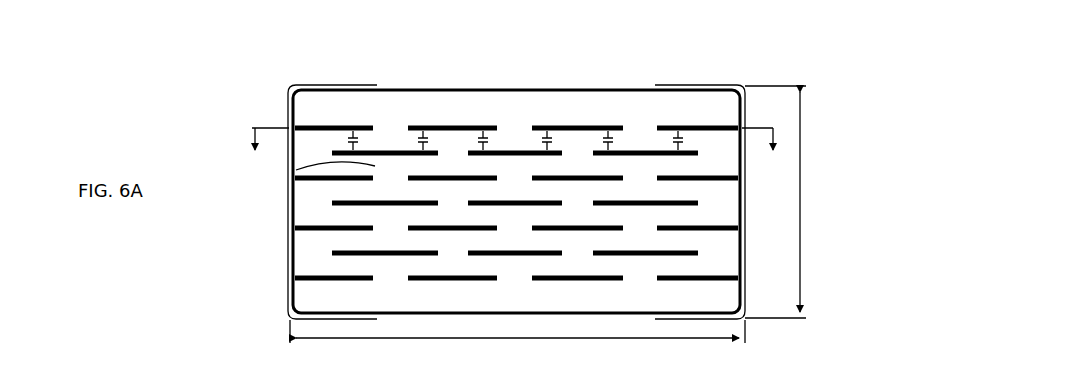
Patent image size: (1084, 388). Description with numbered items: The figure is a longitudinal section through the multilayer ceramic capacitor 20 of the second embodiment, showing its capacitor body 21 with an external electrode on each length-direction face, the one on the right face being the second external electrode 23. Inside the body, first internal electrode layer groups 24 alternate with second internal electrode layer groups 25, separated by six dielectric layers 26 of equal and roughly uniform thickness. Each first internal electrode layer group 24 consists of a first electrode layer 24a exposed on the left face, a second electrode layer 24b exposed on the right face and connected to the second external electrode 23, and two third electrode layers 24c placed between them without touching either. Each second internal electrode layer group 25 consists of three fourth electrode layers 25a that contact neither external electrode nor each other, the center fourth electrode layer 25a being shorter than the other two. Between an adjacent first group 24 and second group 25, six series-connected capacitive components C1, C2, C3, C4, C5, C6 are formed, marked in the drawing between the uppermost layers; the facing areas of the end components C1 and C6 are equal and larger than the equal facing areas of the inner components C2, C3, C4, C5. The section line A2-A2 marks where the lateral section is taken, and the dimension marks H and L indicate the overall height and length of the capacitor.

The multilayer ceramic capacitor 20 is at (299, 86).
The capacitor body 21 is at (482, 90).
The second external electrode 23 is at (322, 86).
The first internal electrode layer group 24 is at (741, 123).
The first electrode layer 24a is at (342, 126).
The second electrode layer 24b is at (690, 126).
The third electrode layer 24c is at (450, 126).
The second internal electrode layer group 25 is at (698, 156).
The fourth electrode layer 25a is at (392, 151).
The dielectric layer 26 is at (296, 170).
The line A2- A2 is at (512, 136).
The capacitive component C1 is at (342, 140).
The capacitive component C2 is at (410, 140).
The capacitive component C3 is at (471, 140).
The capacitive component C4 is at (534, 140).
The capacitive component C5 is at (596, 140).
The capacitive component C6 is at (666, 140).
The height dimension H is at (779, 202).
The length dimension L is at (517, 338).